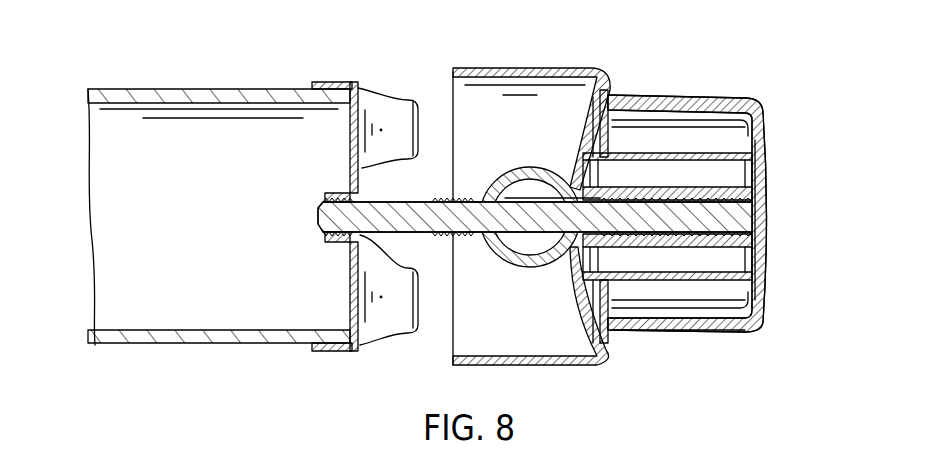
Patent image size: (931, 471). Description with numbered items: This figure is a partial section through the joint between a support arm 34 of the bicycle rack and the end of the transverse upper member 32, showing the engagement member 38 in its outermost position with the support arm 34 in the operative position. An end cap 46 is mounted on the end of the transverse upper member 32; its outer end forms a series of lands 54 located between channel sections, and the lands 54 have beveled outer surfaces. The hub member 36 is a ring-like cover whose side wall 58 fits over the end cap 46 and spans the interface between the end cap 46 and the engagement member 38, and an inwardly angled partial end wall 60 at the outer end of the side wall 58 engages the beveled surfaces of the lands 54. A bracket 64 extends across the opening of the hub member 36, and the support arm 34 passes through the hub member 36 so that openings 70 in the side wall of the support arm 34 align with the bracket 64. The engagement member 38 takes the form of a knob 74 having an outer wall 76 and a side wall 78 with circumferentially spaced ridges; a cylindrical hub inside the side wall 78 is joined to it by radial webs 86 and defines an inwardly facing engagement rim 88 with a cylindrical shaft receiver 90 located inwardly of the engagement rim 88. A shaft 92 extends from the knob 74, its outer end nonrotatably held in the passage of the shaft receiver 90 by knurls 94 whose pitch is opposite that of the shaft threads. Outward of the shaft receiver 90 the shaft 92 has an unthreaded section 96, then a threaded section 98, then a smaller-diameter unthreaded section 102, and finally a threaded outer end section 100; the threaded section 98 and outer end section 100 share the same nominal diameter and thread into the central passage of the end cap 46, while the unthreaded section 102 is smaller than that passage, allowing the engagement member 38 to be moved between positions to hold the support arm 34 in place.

The transverse upper member 32 is at (176, 86).
The support arm 34 is at (529, 222).
The hub member 36 is at (555, 195).
The engagement member 38 is at (696, 230).
The end cap 46 is at (330, 80).
The land 54 is at (420, 140).
The side wall 58 is at (578, 67).
The partial end wall 60 is at (605, 352).
The bracket 64 is at (573, 122).
The openings 70 is at (482, 225).
The knob 74 is at (758, 333).
The outer wall 76 is at (767, 222).
The side wall 78 is at (686, 100).
The radial webs 86 is at (756, 140).
The engagement rim 88 is at (596, 156).
The shaft receiver 90 is at (716, 186).
The shaft 92 is at (497, 188).
The knurls 94 is at (726, 245).
The unthreaded section 96 is at (530, 196).
The threaded section 98 is at (466, 197).
The threaded outer end section 100 is at (340, 195).
The unthreaded section 102 is at (432, 198).